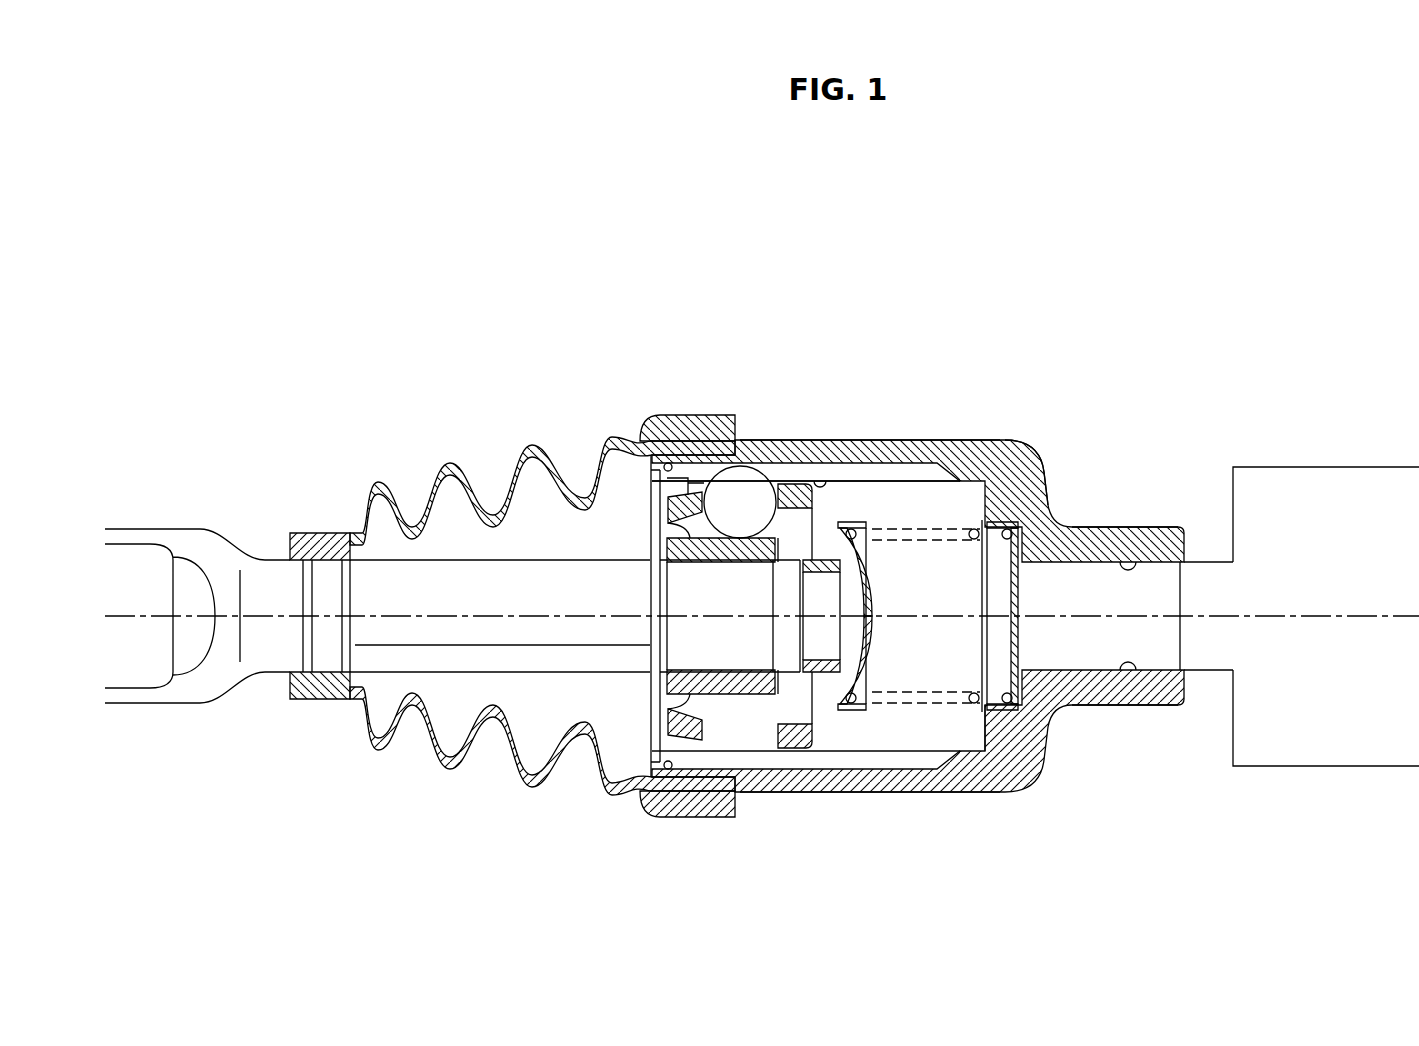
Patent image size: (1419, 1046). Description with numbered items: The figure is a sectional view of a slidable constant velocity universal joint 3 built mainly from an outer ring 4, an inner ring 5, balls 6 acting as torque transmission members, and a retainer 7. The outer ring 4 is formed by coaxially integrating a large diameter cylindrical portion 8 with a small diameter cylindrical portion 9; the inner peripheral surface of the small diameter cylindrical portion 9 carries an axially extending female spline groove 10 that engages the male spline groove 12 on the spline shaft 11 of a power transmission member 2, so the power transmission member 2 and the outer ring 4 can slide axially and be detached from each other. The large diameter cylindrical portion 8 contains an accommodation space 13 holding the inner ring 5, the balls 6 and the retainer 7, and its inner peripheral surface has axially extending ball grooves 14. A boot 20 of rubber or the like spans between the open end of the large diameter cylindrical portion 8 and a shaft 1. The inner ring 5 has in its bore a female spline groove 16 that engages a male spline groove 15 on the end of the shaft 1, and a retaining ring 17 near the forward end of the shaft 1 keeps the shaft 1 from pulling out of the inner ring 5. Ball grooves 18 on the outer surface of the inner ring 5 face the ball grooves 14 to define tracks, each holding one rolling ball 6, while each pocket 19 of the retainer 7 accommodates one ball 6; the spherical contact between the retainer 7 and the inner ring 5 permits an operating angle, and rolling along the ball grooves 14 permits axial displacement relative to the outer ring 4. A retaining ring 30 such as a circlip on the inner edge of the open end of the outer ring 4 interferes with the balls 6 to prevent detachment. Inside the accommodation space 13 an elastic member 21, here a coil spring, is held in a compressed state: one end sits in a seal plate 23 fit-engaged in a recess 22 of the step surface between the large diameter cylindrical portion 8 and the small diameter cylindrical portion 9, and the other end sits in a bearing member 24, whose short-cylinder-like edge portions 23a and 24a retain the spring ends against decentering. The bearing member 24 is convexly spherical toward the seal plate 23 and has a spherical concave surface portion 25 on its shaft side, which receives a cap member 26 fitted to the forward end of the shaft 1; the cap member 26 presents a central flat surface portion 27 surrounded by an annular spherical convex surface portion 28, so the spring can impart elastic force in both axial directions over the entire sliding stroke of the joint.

The shaft 1 is at (205, 517).
The power transmission member 2 is at (1224, 447).
The slidable constant velocity universal joint 3 is at (889, 430).
The outer ring 4 is at (985, 458).
The inner ring 5 is at (735, 720).
The ball 6 is at (745, 480).
The retainer 7 is at (785, 735).
The large diameter cylindrical portion 8 is at (853, 452).
The small diameter cylindrical portion 9 is at (1088, 540).
The female spline groove 10 is at (1130, 565).
The spline shaft 11 is at (1088, 652).
The male spline groove 12 is at (1135, 668).
The accommodation space 13 is at (950, 753).
The ball groove 14 is at (820, 474).
The male spline groove 15 is at (665, 707).
The female spline groove 16 is at (720, 642).
The retaining ring 17 is at (800, 720).
The ball groove 18 is at (665, 522).
The pocket 19 is at (765, 487).
The boot 20 is at (548, 446).
The elastic member 21 is at (925, 528).
The recess 22 is at (995, 712).
The seal plate 23 is at (996, 582).
The edge portion 23a is at (1000, 522).
The bearing member 24 is at (890, 648).
The edge portion 24a is at (860, 705).
The spherical concave surface portion 25 is at (860, 682).
The cap member 26 is at (842, 550).
The flat surface portion 27 is at (841, 612).
The annular spherical convex surface portion 28 is at (850, 580).
The retaining ring 30 is at (633, 445).